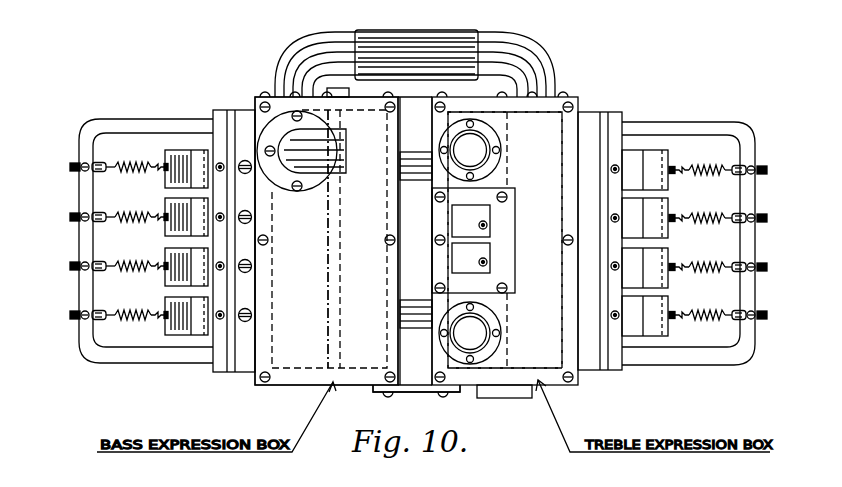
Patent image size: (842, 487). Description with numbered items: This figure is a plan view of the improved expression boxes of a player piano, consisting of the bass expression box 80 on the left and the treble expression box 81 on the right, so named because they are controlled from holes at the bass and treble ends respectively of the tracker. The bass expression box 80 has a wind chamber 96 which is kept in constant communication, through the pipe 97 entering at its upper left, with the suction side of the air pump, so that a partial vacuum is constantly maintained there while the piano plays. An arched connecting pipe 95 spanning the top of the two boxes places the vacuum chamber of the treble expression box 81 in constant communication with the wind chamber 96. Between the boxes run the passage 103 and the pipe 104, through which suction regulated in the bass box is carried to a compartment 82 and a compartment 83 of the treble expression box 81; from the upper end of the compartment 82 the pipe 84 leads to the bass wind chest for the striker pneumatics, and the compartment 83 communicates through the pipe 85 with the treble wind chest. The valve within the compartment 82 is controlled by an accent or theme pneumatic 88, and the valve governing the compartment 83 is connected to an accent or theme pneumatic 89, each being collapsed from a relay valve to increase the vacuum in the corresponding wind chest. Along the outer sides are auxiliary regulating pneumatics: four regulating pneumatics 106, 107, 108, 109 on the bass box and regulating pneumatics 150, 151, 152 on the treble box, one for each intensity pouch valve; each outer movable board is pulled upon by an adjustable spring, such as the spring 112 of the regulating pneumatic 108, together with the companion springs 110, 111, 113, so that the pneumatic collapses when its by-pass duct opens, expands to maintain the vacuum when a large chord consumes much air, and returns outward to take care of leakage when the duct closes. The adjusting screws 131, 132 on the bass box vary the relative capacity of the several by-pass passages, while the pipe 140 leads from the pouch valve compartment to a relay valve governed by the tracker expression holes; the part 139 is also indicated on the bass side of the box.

The bass expression box 80 is at (272, 385).
The treble expression box 81 is at (478, 392).
The compartment 82 is at (505, 128).
The compartment 83 is at (462, 384).
The pipe 84 is at (500, 150).
The pipe 85 is at (495, 323).
The accent or theme pneumatic 88 is at (455, 221).
The accent or theme pneumatic 89 is at (455, 259).
The connecting pipe 95 is at (433, 42).
The wind chamber 96 is at (333, 280).
The pipe 97 is at (316, 175).
The passage 103 is at (414, 163).
The pipe 104 is at (413, 310).
The regulating pneumatic 106 is at (178, 152).
The regulating pneumatic 107 is at (170, 206).
The regulating pneumatic 108 is at (170, 256).
The regulating pneumatic 109 is at (170, 305).
The spring 110 is at (128, 163).
The spring 111 is at (130, 212).
The adjustable spring 112 is at (127, 262).
The spring 113 is at (124, 311).
The adjusting screw 131 is at (250, 316).
The adjusting screw 132 is at (250, 267).
The pin 139 is at (218, 320).
The pipe 140 is at (224, 270).
The regulating pneumatic 150 is at (658, 156).
The regulating pneumatic 151 is at (660, 215).
The regulating pneumatic 152 is at (660, 263).